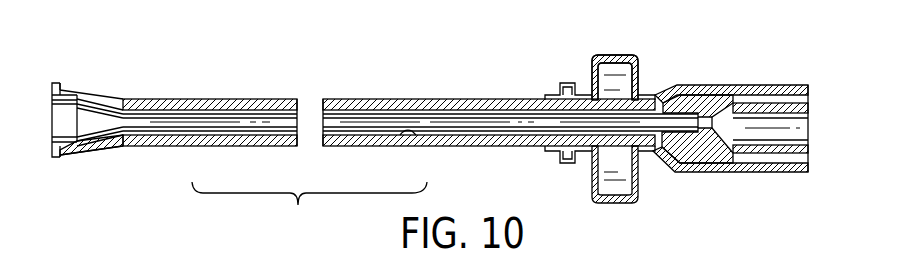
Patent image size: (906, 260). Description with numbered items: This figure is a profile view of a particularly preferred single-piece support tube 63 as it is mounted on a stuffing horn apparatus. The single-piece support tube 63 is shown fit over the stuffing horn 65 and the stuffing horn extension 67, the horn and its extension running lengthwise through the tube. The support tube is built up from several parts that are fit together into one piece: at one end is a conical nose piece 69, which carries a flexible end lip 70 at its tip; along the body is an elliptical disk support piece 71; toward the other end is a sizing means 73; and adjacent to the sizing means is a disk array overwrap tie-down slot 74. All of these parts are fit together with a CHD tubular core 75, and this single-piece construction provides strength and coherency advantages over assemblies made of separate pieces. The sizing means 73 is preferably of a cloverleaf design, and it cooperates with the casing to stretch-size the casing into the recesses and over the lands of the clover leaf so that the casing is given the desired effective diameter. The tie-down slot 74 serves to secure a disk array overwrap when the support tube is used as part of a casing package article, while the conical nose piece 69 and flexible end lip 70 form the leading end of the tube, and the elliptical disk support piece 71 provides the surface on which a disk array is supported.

The single-piece support tube 63 is at (507, 108).
The stuffing horn 65 is at (740, 158).
The stuffing horn extension 67 is at (408, 133).
The conical nose piece 69 is at (100, 103).
The flexible end lip 70 is at (57, 83).
The elliptical disk support piece 71 is at (229, 143).
The sizing means 73 is at (622, 57).
The disk array overwrap tie-down slot 74 is at (583, 85).
The CHD tubular core 75 is at (771, 170).